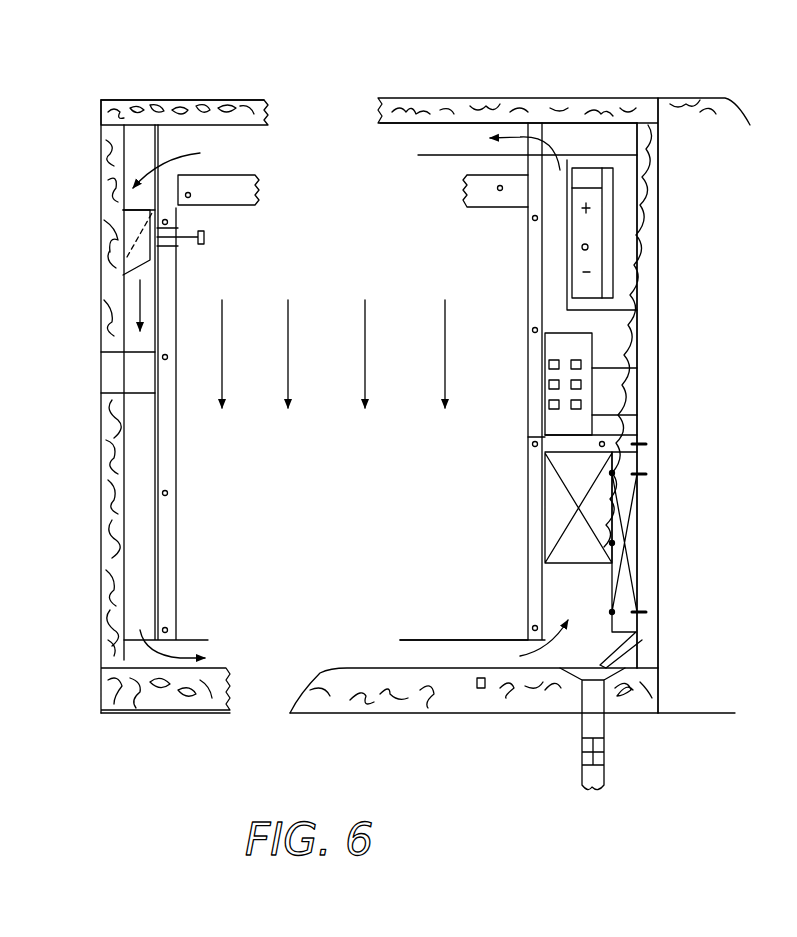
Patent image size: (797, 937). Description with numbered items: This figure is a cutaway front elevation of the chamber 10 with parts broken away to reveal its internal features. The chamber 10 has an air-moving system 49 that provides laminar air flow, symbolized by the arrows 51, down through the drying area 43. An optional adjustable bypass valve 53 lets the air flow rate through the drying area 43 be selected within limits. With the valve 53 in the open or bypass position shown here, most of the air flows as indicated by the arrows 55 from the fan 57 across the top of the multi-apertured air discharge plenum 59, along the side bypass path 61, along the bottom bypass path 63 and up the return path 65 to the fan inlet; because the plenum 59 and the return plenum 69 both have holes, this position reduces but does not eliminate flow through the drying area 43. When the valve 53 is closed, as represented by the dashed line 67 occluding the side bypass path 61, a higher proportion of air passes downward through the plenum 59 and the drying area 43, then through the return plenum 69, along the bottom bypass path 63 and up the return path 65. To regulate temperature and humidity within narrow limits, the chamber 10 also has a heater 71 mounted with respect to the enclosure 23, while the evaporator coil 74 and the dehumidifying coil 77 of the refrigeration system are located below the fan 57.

The chamber 10 is at (505, 86).
The enclosure 23 is at (196, 100).
The drying area 43 is at (380, 245).
The air-moving system 49 is at (674, 206).
The arrows 51 is at (222, 390).
The adjustable bypass valve 53 is at (150, 262).
The arrows 55 is at (138, 308).
The fan 57 is at (583, 273).
The multi-apertured air discharge plenum 59 is at (244, 204).
The side bypass path 61 is at (148, 470).
The bottom bypass path 63 is at (427, 650).
The return path 65 is at (578, 592).
The dashed line 67 is at (138, 232).
The return plenum 69 is at (458, 637).
The heater 71 is at (570, 346).
The evaporator coil 74 is at (557, 507).
The dehumidifying coil 77 is at (626, 495).